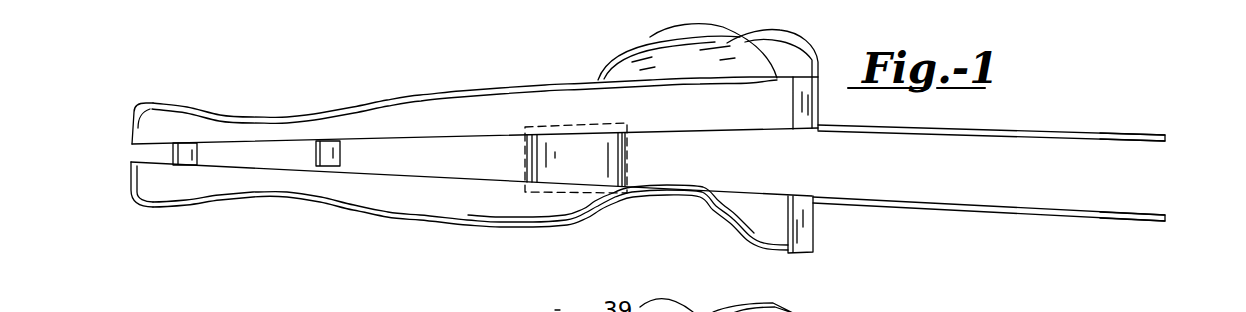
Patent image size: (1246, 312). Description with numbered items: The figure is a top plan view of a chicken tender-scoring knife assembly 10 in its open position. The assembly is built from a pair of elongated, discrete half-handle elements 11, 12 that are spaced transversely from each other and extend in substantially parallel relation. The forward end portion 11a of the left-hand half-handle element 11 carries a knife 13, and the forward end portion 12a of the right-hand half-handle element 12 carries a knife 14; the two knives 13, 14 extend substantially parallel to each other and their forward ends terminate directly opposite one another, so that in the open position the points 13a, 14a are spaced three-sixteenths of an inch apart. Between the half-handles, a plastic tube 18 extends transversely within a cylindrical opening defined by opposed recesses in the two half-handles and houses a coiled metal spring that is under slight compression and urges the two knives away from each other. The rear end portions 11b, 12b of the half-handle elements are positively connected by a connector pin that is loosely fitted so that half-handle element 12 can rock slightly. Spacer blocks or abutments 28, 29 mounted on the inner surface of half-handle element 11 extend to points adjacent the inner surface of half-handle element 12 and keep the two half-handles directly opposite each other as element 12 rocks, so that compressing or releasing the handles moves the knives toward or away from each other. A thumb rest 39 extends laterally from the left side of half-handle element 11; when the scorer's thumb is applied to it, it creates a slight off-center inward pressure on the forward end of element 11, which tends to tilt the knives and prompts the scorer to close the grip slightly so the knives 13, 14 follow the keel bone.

The tender-scoring knife assembly 10 is at (1062, 96).
The half-handle element 11 is at (433, 92).
The forward end portion 11a is at (687, 51).
The rear end portion 11b is at (248, 117).
The half-handle element 12 is at (443, 220).
The forward end portion 12a is at (785, 252).
The rear end portion 12b is at (243, 200).
The knife 13 is at (970, 126).
The point 13a is at (1162, 138).
The knife 14 is at (982, 211).
The point 14a is at (1160, 222).
The plastic tube 18 is at (628, 158).
The spacer block 28 is at (200, 153).
The spacer block 29 is at (314, 157).
The thumb rest 39 is at (816, 44).